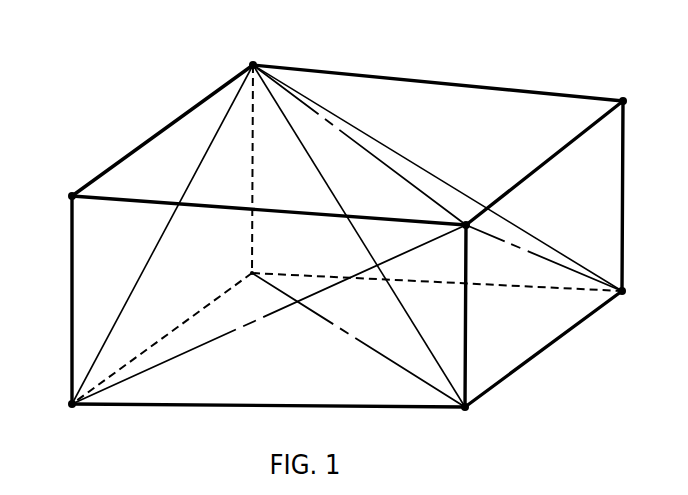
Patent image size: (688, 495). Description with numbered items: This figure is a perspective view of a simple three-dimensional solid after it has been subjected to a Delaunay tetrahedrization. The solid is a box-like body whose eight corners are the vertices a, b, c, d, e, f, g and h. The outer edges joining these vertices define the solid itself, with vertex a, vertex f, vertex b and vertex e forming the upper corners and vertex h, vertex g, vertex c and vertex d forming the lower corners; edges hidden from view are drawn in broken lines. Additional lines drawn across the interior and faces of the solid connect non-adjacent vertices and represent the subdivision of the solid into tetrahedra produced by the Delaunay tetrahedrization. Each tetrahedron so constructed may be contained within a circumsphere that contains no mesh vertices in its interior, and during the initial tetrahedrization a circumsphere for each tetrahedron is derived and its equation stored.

The vertex a is at (254, 52).
The vertex b is at (468, 214).
The vertex c is at (468, 417).
The vertex d is at (62, 408).
The vertex e is at (64, 186).
The vertex f is at (628, 90).
The vertex g is at (632, 291).
The vertex h is at (242, 263).